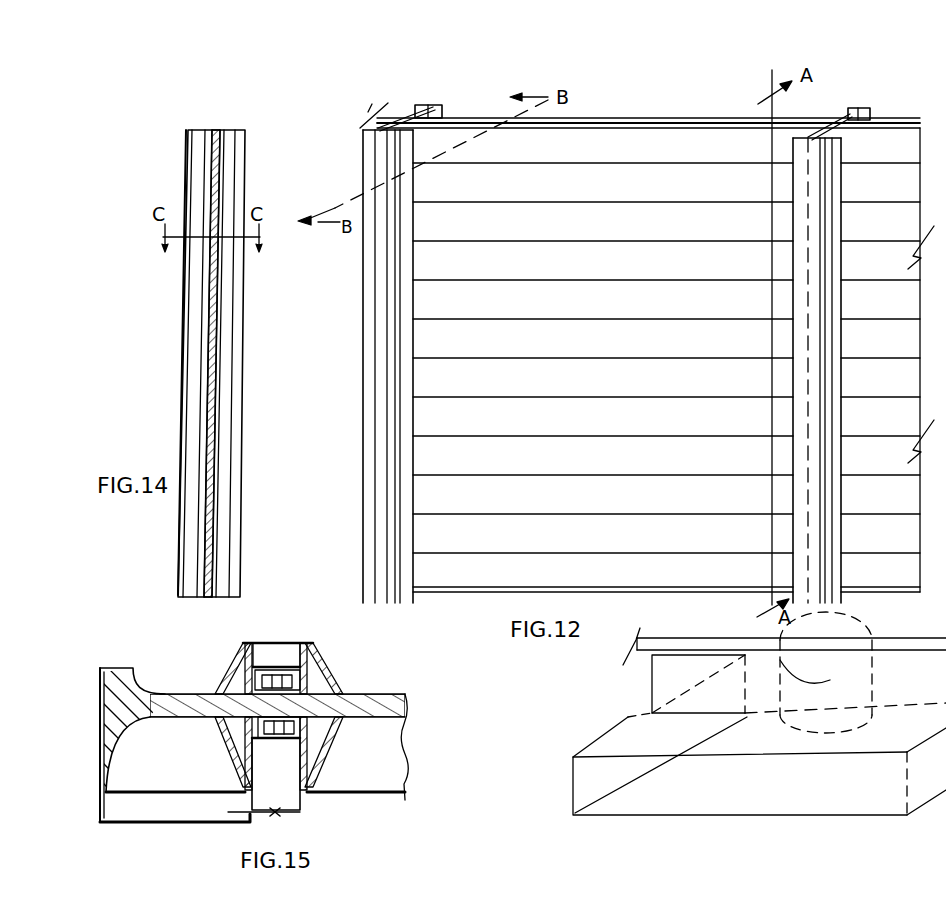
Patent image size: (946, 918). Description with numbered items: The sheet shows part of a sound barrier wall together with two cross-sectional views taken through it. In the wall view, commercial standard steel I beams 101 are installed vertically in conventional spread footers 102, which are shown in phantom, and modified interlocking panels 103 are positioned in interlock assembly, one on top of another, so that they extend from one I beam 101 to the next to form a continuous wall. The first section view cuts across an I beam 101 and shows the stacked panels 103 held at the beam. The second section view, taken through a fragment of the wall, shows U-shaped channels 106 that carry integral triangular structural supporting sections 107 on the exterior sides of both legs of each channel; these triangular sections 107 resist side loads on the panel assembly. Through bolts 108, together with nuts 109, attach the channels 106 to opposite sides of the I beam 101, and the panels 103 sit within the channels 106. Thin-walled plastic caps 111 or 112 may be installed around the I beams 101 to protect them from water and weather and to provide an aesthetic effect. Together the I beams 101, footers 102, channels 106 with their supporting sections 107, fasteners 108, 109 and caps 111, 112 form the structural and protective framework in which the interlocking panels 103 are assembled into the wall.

In FIG. 14, the steel I beam 101 is at (247, 146).
In FIG. 12, the steel I beam 101 is at (437, 104).
In FIG. 12, the spread footer 102 is at (830, 680).
In FIG. 14, the interlocking panel 103 is at (238, 345).
In FIG. 12, the interlocking panel 103 is at (555, 280).
In FIG. 15, the U-shaped channel 106 is at (305, 645).
In FIG. 15, the triangular structural supporting section 107 is at (239, 682).
In FIG. 15, the through bolt 108 is at (222, 684).
In FIG. 15, the nut 109 is at (342, 696).
In FIG. 15, the thin-walled plastic cap 111 is at (137, 790).
In FIG. 15, the thin-walled plastic cap 112 is at (100, 820).